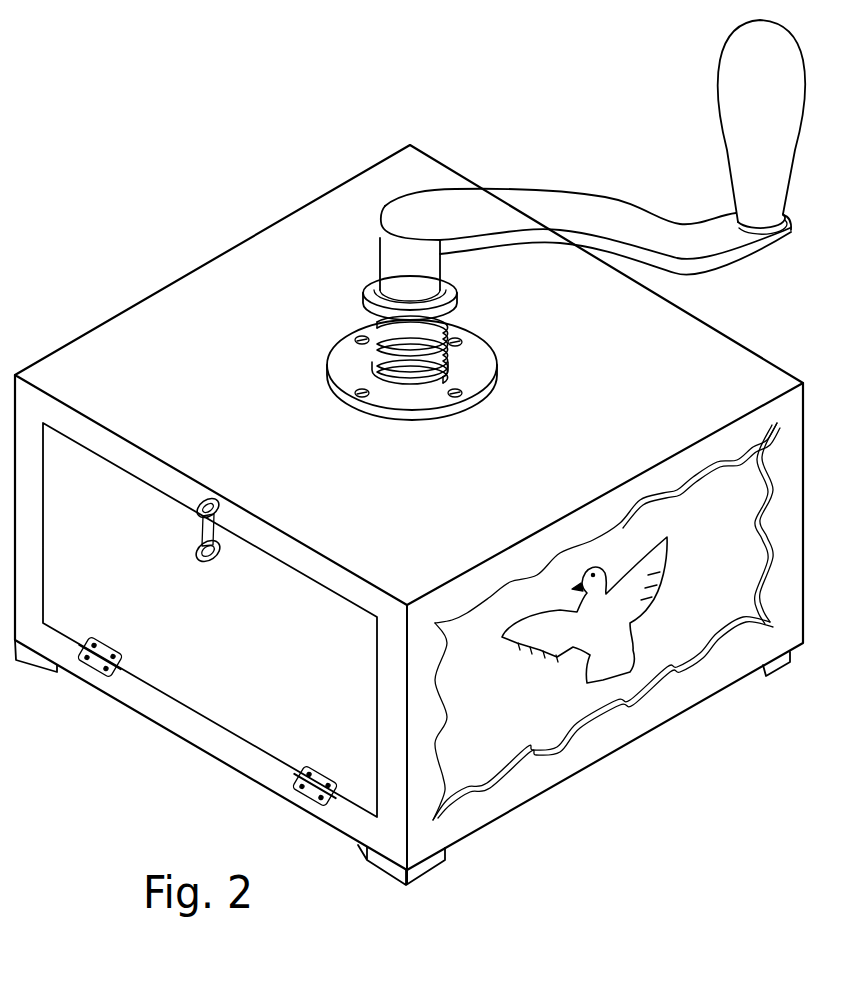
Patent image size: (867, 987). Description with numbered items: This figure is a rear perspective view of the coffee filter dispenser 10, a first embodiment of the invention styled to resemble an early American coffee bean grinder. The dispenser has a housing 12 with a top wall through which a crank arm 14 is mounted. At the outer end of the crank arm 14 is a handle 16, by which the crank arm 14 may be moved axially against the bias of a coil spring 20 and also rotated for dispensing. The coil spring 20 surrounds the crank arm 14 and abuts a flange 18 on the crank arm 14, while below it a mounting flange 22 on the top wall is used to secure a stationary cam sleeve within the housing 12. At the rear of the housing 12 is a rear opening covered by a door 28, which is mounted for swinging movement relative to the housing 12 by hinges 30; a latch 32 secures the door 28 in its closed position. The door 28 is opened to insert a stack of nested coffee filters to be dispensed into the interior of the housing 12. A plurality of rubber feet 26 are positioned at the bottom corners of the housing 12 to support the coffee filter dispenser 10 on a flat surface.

The coffee filter dispenser 10 is at (221, 104).
The housing 12 is at (425, 518).
The crank arm 14 is at (547, 182).
The handle 16 is at (731, 59).
The flange 18 is at (360, 295).
The coil spring 20 is at (458, 325).
The mounting flange 22 is at (498, 366).
The rubber feet 26 is at (41, 667).
The door 28 is at (288, 627).
The hinges 30 is at (112, 636).
The latch 32 is at (197, 526).